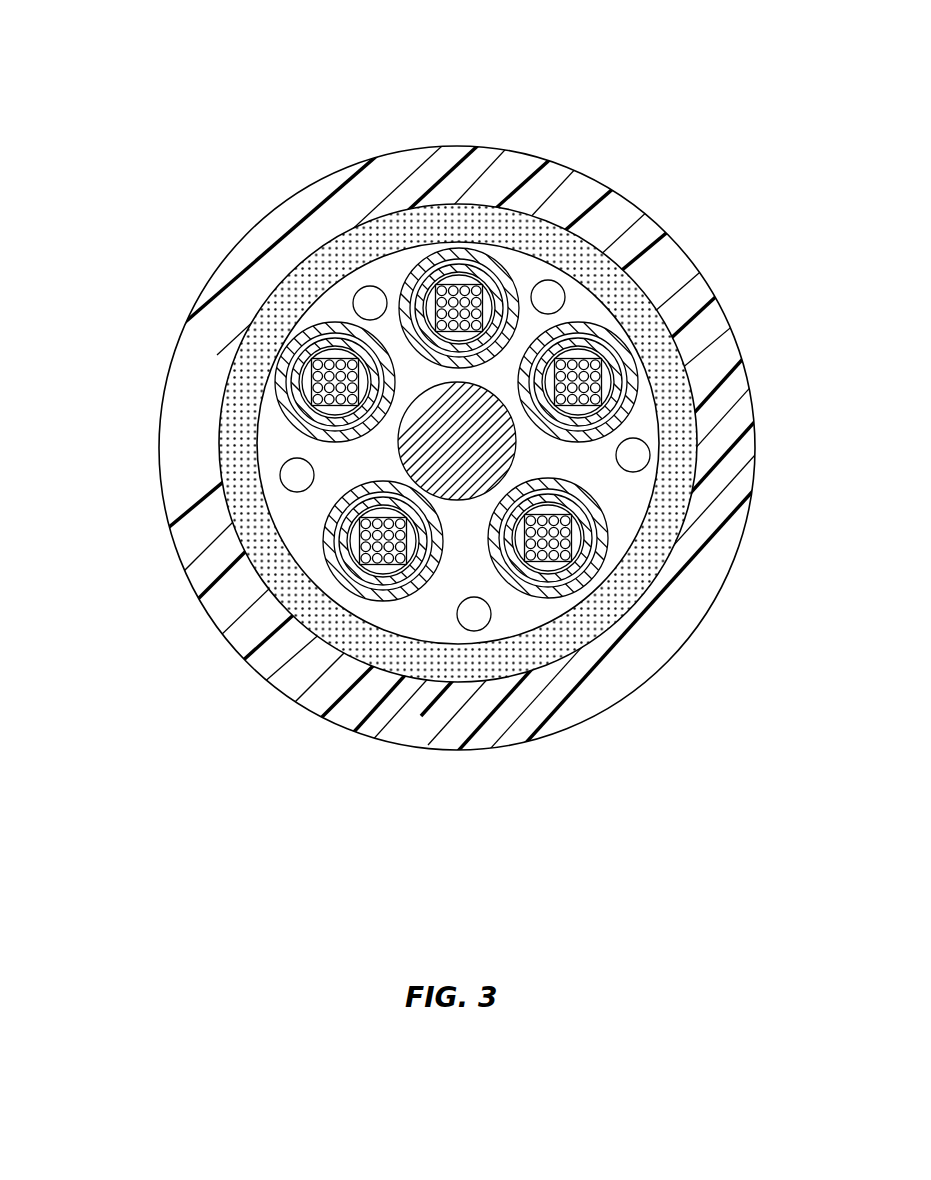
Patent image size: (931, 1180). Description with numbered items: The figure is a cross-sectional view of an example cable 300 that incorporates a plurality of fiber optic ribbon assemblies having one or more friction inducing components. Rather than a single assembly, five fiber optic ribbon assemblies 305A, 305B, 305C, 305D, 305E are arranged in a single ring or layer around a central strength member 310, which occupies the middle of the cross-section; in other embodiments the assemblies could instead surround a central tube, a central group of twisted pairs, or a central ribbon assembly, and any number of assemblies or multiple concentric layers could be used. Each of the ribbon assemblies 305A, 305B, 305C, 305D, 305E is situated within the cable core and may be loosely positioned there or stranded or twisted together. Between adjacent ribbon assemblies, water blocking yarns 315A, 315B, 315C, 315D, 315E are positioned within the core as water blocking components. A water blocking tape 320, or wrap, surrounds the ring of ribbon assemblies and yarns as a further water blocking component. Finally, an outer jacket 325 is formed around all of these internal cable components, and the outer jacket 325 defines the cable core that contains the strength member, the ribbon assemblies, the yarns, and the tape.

The cable 300 is at (146, 40).
The fiber optic ribbon assembly 305A is at (585, 342).
The fiber optic ribbon assembly 305B is at (615, 553).
The fiber optic ribbon assembly 305C is at (322, 537).
The fiber optic ribbon assembly 305D is at (277, 400).
The fiber optic ribbon assembly 305E is at (467, 288).
The central strength member 310 is at (463, 447).
The water blocking yarn 315A is at (550, 296).
The water blocking yarn 315B is at (638, 455).
The water blocking yarn 315C is at (474, 617).
The water blocking yarn 315D is at (293, 475).
The water blocking yarn 315E is at (358, 300).
The water blocking tape 320 is at (612, 607).
The outer jacket 325 is at (582, 685).